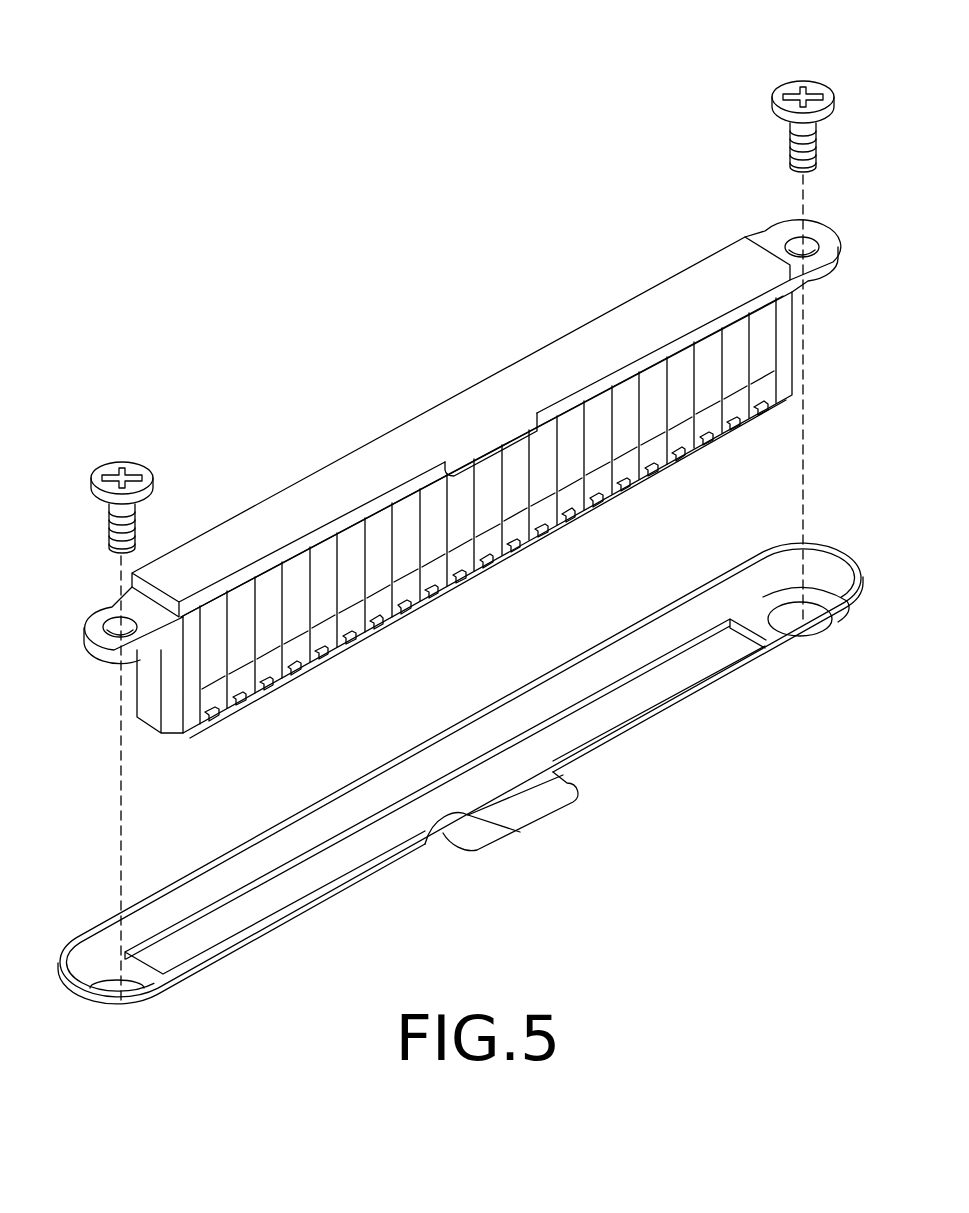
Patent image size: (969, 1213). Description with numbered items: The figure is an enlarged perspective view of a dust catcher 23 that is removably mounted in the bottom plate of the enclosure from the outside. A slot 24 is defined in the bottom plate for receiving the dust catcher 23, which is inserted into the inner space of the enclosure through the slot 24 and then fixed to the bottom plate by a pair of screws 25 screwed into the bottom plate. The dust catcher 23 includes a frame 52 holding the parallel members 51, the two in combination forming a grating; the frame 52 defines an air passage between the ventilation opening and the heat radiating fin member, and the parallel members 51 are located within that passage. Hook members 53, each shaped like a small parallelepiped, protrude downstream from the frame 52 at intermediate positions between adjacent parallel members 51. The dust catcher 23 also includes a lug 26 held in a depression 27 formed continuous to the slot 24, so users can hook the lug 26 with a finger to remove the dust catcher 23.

The dust catcher 23 is at (333, 463).
The slot 24 is at (682, 700).
The screws 25 is at (815, 85).
The lug 26 is at (530, 421).
The depression 27 is at (424, 845).
The parallel members 51 is at (741, 417).
The frame 52 is at (612, 322).
The hook members 53 is at (494, 565).